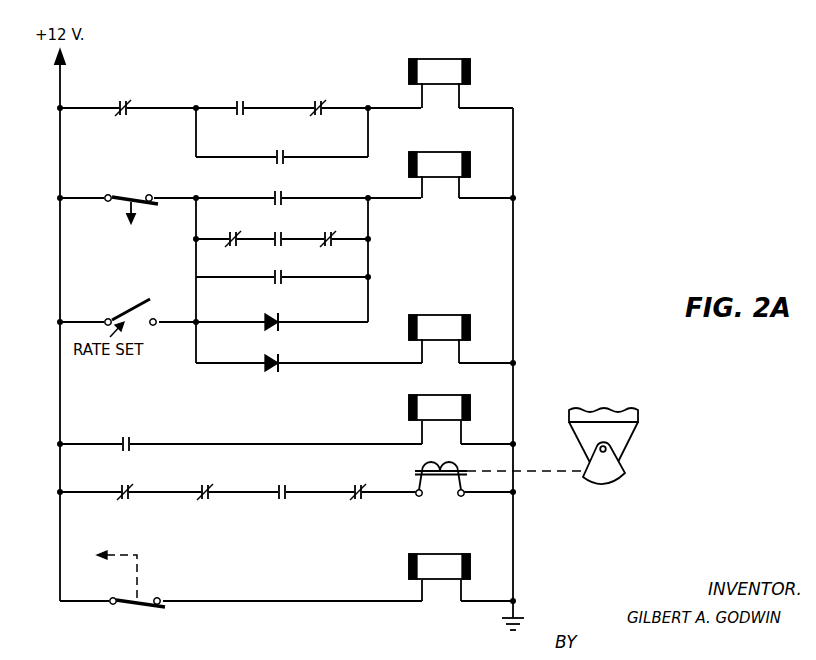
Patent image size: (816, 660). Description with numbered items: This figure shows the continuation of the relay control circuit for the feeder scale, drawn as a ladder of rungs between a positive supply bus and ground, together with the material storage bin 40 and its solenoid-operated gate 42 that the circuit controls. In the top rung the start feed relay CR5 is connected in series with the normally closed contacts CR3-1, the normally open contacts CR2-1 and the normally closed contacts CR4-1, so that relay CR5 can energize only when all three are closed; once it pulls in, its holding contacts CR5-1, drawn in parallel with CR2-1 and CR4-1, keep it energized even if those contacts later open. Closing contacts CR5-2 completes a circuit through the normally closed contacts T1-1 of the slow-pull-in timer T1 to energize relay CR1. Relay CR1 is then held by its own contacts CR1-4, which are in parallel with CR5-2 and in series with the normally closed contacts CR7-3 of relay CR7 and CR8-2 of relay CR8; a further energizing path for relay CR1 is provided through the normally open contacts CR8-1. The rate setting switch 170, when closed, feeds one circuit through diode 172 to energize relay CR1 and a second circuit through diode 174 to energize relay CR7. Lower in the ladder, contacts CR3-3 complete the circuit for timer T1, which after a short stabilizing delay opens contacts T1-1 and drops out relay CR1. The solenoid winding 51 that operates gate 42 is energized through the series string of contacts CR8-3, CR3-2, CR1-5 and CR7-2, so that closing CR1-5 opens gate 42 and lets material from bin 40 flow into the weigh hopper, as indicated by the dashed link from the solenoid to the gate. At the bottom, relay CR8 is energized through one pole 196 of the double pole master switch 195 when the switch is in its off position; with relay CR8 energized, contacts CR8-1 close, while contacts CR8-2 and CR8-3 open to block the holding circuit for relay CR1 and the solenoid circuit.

The material storage bin 40 is at (623, 432).
The solenoid-operated gate 42 is at (623, 473).
The solenoid coil 51 is at (440, 490).
The rate setting switch 170 is at (125, 309).
The diode 172 is at (268, 318).
The diode 174 is at (268, 360).
The double pole master switch 195 is at (136, 614).
The pole of master switch 196 is at (144, 600).
The start feed relay CR5 is at (452, 59).
The relay CR1 is at (450, 153).
The relay CR7 is at (450, 315).
The relay CR8 is at (443, 554).
The slow-pull-in timer T1 is at (409, 407).
The normally closed contacts of relay CR3 CR3-1 is at (137, 95).
The normally open contacts of relay CR2 CR2-1 is at (250, 95).
The normally closed contacts of relay CR4 CR4-1 is at (332, 95).
The normally open contacts of relay CR5 CR5-1 is at (285, 160).
The normally open contacts of relay CR5 CR5-2 is at (284, 202).
The normally closed contacts of timer T1 T1-1 is at (121, 196).
The normally closed contacts of relay CR8 CR8-2 is at (227, 244).
The normally open contacts of relay CR1 CR1-4 is at (282, 233).
The normally closed contacts of relay CR7 CR7-3 is at (334, 247).
The normally open contacts of relay CR8 CR8-1 is at (285, 281).
The contacts of relay CR3 CR3-3 is at (138, 425).
The normally closed contacts of relay CR8 CR8-3 is at (124, 498).
The normally closed contacts of relay CR3 CR3-2 is at (211, 475).
The normally open contacts of relay CR1 CR1-5 is at (281, 498).
The normally closed contacts of relay CR7 CR7-2 is at (361, 475).